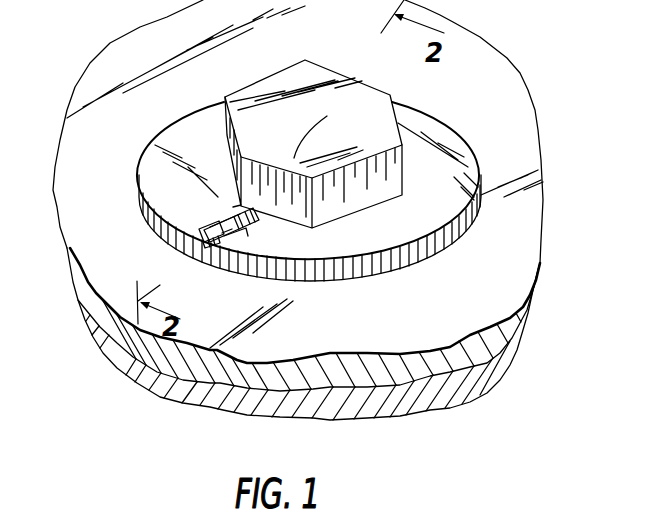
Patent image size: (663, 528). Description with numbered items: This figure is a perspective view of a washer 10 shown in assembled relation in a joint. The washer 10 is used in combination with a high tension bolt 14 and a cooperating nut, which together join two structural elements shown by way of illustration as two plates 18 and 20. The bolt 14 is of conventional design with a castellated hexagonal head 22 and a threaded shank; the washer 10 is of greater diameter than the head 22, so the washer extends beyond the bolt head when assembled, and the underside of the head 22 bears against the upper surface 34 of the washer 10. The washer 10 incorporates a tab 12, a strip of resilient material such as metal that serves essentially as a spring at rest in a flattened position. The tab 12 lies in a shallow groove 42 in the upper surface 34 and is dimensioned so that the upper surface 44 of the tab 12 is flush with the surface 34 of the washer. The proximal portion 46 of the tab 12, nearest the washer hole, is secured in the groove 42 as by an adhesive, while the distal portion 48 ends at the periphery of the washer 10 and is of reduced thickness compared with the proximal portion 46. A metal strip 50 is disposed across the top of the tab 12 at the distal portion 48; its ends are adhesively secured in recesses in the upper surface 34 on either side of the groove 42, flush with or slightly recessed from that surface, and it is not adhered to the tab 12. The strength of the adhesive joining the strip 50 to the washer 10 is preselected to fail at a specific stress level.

The washer 10 is at (480, 166).
The tab 12 is at (251, 221).
The high tension bolt 14 is at (403, 127).
The plate 18 is at (511, 326).
The plate 20 is at (494, 372).
The castellated hexagonal head 22 is at (268, 88).
The upper surface of the washer 34 is at (394, 240).
The shallow groove 42 is at (228, 216).
The upper surface of the tab 44 is at (230, 218).
The proximal portion of the tab 46 is at (237, 205).
The distal portion of the tab 48 is at (211, 248).
The metal strip 50 is at (249, 239).